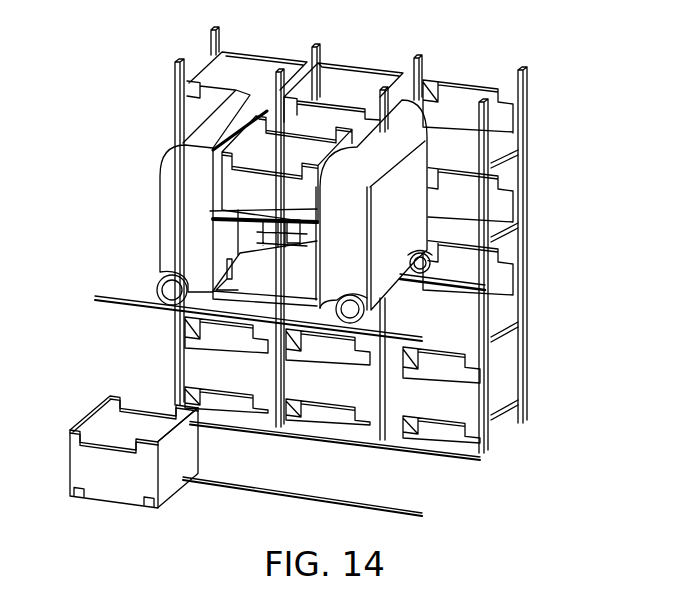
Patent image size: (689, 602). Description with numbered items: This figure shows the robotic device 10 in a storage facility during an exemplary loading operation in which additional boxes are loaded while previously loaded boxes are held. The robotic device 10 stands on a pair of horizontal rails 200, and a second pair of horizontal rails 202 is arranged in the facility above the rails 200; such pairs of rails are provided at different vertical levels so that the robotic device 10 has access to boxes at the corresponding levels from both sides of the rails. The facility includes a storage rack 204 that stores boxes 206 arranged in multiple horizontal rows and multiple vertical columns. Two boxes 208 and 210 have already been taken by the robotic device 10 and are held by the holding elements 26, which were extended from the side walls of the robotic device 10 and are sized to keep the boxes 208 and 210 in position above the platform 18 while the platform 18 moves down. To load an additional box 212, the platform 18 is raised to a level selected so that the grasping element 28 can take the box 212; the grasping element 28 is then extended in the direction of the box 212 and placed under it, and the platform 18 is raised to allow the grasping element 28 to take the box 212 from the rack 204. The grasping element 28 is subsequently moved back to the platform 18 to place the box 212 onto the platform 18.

The robotic device 10 is at (276, 198).
The platform 18 is at (229, 278).
The holding elements 26 is at (215, 211).
The grasping element 28 is at (303, 237).
The rails 200 is at (247, 491).
The horizontal rails 202 is at (103, 297).
The storage rack 204 is at (521, 200).
The boxes 206 is at (470, 93).
The box 208 is at (288, 158).
The box 210 is at (319, 133).
The additional box 212 is at (215, 221).